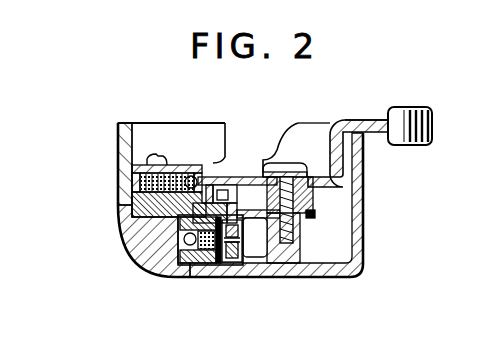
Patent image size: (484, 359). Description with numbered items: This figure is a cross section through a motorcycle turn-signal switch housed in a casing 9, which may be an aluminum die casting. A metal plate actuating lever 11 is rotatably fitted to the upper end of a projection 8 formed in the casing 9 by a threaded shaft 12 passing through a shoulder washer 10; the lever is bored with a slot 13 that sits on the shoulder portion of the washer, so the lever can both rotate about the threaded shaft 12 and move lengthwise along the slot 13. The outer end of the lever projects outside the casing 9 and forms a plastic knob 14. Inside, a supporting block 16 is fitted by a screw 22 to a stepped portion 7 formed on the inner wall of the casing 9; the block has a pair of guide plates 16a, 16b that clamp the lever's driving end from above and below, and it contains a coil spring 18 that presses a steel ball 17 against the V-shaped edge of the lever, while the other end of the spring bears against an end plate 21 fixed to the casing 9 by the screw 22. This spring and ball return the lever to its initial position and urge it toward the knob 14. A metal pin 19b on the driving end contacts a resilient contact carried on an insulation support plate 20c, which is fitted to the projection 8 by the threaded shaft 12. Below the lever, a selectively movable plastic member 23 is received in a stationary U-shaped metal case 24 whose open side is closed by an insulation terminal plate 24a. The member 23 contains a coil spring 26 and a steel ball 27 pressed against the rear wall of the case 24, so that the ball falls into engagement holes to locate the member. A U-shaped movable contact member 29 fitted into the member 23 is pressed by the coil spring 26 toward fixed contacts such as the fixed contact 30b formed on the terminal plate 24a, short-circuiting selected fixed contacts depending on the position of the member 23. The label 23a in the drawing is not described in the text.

The stepped portion 7 is at (140, 247).
The projection 8 is at (300, 250).
The casing 9 is at (364, 177).
The shoulder washer 10 is at (309, 198).
The actuating lever 11 is at (351, 120).
The threaded shaft 12 is at (289, 228).
The slot 13 is at (304, 180).
The knob 14 is at (420, 146).
The supporting block 16 is at (140, 212).
The guide plate 16a is at (210, 178).
The guide plate 16b is at (206, 168).
The steel ball 17 is at (194, 176).
The coil spring 18 is at (178, 165).
The metal pin 19b is at (225, 190).
The insulation support plate 20c is at (316, 213).
The end plate 21 is at (132, 181).
The screw 22 is at (155, 158).
The selectively movable member 23 is at (180, 232).
The cam portion 23a is at (252, 210).
The stationary U-shaped metal case 24 is at (185, 267).
The insulation terminal plate 24a is at (300, 268).
The coil spring 26 is at (205, 265).
The steel ball 27 is at (145, 255).
The movable contact member 29 is at (228, 270).
The fixed contact 30b is at (248, 268).